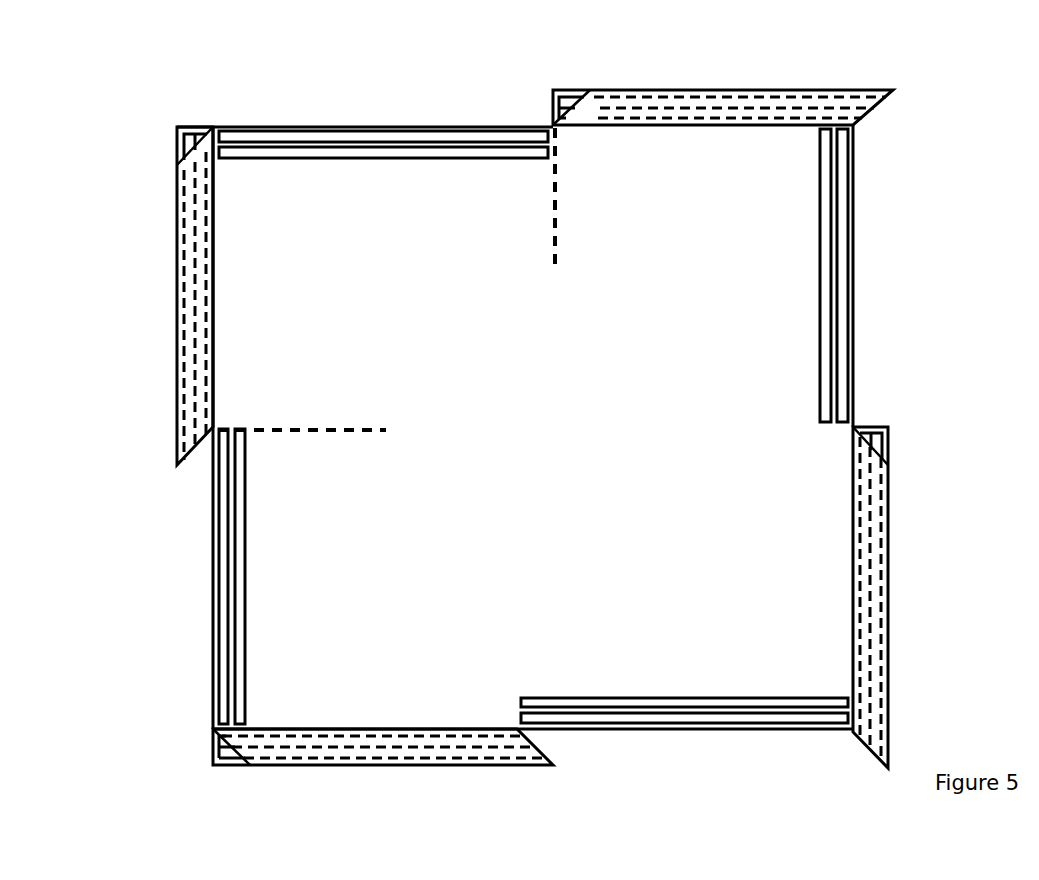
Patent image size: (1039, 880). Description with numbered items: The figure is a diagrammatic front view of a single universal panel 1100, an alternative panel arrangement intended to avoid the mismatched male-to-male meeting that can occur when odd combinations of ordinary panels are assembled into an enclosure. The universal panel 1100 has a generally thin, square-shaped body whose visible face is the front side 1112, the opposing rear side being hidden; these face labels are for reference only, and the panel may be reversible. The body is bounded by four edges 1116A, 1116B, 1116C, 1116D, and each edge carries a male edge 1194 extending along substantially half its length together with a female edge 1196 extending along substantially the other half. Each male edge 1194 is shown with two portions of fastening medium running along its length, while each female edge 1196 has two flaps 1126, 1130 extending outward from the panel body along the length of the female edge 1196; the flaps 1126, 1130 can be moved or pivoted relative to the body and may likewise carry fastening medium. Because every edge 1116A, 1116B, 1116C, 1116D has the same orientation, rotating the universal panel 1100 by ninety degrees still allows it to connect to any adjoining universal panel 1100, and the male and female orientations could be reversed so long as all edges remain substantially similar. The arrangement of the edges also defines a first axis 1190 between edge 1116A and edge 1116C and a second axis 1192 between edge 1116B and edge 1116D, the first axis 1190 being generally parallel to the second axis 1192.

The universal panel 1100 is at (158, 780).
The front side 1112 is at (472, 333).
The edge 1116A is at (857, 422).
The edge 1116B is at (684, 72).
The edge 1116C is at (213, 448).
The edge 1116D is at (530, 734).
The flap 1126 is at (568, 92).
The flap 1130 is at (655, 88).
The first axis 1190 is at (567, 217).
The second axis 1192 is at (335, 440).
The male edge 1194 is at (328, 127).
The female edge 1196 is at (650, 128).